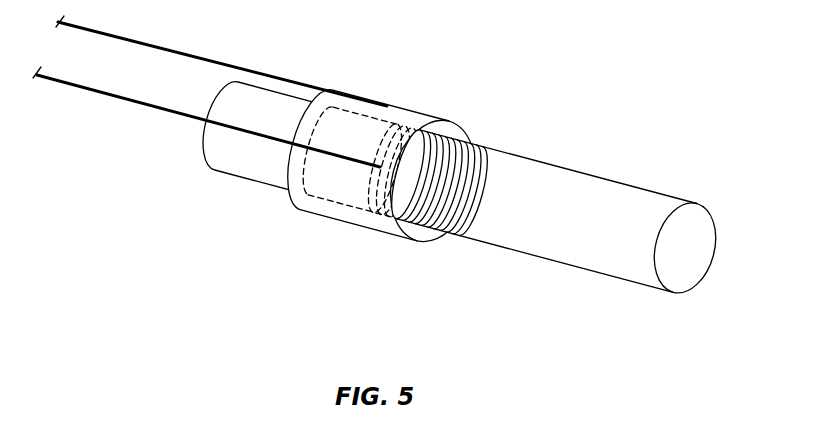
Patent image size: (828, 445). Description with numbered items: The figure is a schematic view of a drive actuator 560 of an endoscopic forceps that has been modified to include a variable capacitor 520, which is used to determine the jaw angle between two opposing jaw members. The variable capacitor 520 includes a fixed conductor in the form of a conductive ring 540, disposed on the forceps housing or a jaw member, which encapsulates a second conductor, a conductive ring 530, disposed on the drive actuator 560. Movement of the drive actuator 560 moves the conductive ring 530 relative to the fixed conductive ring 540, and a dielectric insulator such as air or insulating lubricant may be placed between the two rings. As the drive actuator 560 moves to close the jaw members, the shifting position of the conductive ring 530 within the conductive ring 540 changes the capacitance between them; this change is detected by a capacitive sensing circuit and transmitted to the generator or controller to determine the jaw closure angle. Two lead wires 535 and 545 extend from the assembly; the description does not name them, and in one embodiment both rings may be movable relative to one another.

The variable capacitor 520 is at (374, 152).
The conductive ring 530 is at (473, 141).
The second lead wire 535 is at (131, 101).
The conductive ring 540 is at (387, 106).
The first lead wire 545 is at (150, 43).
The drive actuator 560 is at (594, 181).